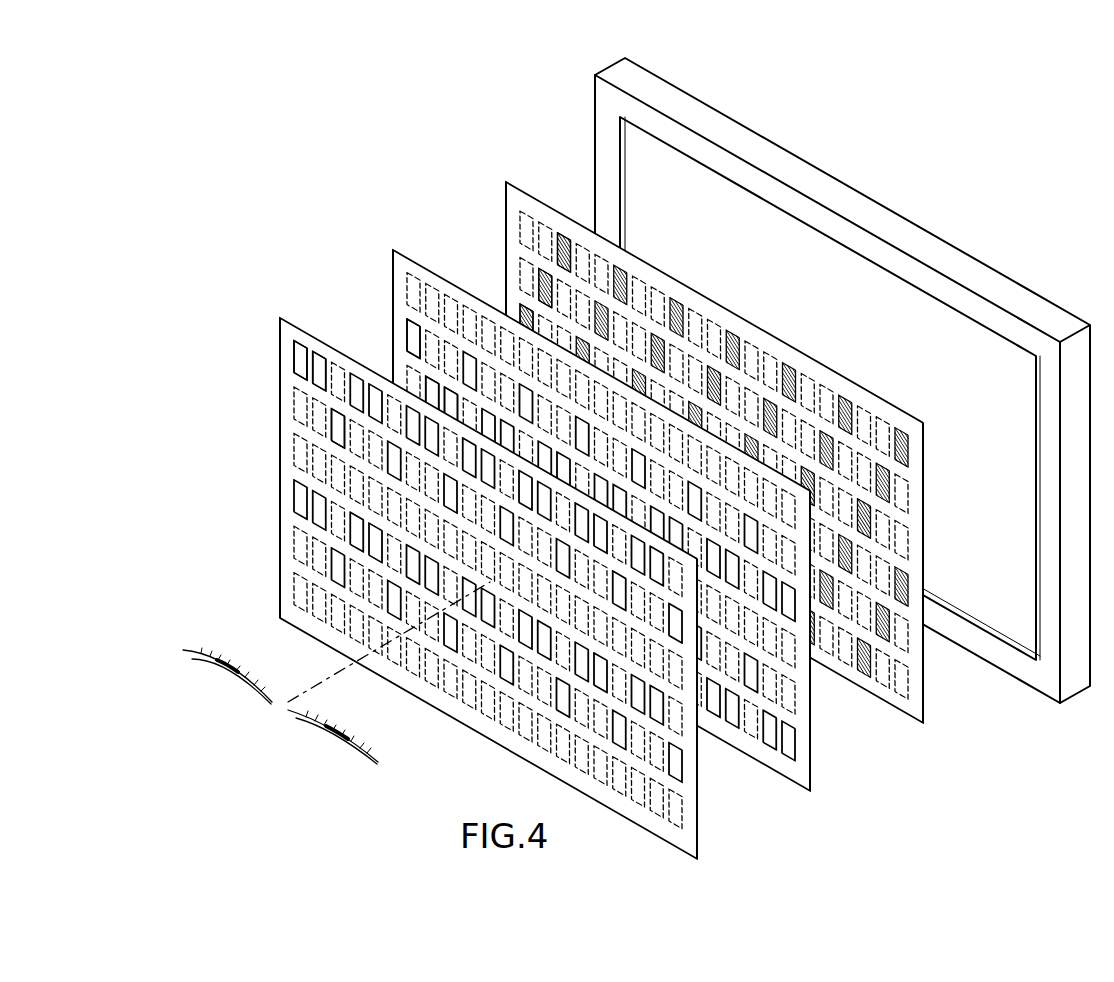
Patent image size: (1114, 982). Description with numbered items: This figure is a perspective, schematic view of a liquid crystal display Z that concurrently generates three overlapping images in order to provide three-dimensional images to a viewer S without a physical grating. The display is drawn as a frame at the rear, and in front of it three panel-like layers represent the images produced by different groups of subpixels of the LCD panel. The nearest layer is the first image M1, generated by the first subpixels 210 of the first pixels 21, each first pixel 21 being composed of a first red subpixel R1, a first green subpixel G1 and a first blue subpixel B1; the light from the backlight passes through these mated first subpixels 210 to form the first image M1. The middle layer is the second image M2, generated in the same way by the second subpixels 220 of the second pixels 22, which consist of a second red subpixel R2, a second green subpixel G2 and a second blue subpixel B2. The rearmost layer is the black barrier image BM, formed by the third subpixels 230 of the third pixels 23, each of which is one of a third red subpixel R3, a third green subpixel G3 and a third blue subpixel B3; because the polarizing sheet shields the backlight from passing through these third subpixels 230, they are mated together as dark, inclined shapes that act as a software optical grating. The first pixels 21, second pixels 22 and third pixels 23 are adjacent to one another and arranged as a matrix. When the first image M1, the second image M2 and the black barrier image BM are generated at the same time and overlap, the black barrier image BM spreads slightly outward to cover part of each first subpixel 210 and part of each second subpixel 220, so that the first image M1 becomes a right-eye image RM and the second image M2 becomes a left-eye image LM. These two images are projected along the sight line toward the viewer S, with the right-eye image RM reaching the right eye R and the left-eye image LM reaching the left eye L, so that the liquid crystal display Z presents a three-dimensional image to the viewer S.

The liquid crystal display Z is at (964, 249).
The black barrier image BM is at (683, 442).
The first image M1 is at (486, 588).
The right-eye image RM is at (488, 588).
The second image M2 is at (593, 514).
The left-eye image LM is at (601, 520).
The first pixel 21 is at (240, 395).
The first subpixel 210 is at (256, 395).
The first red subpixel R1 is at (297, 352).
The first green subpixel G1 is at (318, 382).
The first blue subpixel B1 is at (335, 438).
The second pixel 22 is at (349, 332).
The second subpixel 220 is at (365, 332).
The second red subpixel R2 is at (415, 340).
The second green subpixel G2 is at (432, 374).
The second blue subpixel B2 is at (452, 387).
The third pixel 23 is at (463, 252).
The third subpixel 230 is at (479, 252).
The third red subpixel R3 is at (508, 301).
The third green subpixel G3 is at (543, 268).
The third blue subpixel B3 is at (562, 233).
The viewer S is at (233, 750).
The left eye L is at (226, 664).
The right eye R is at (333, 731).